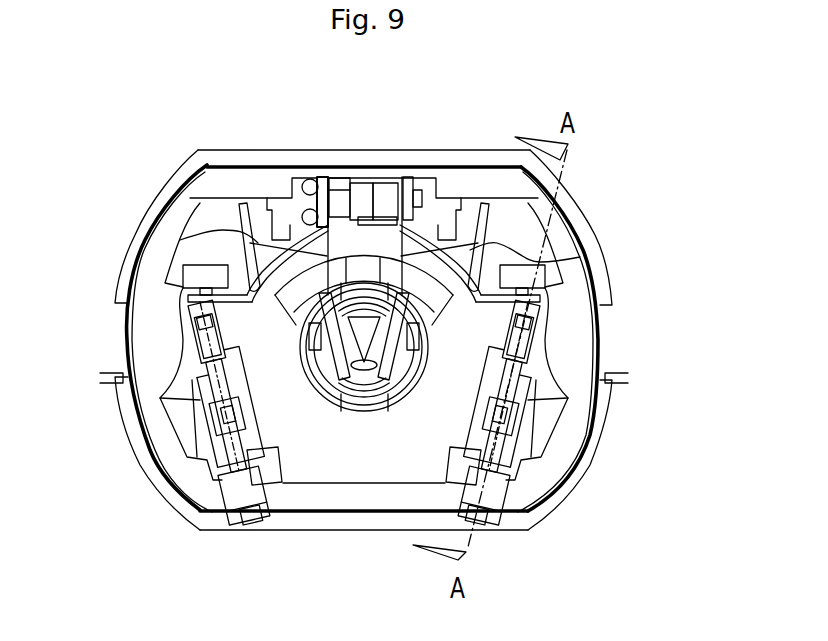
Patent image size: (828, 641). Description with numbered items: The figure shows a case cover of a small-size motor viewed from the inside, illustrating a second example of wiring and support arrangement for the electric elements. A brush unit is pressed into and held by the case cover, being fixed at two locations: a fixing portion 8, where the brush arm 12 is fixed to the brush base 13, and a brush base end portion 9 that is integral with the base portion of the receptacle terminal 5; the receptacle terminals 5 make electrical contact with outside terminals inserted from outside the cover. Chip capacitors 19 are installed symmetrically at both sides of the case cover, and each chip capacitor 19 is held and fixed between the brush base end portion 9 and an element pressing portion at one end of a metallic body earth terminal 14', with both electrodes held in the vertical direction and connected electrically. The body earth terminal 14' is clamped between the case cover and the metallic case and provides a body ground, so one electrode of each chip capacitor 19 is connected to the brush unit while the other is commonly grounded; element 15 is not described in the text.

The support block 15 is at (377, 174).
The fixing portion 8 is at (404, 178).
The receptacle terminal 5 is at (190, 202).
The brush arm 12 is at (190, 238).
The brush base 13 is at (580, 257).
The chip capacitor 19 is at (205, 322).
The brush base end portion 9 is at (528, 316).
The body earth terminal 14' is at (365, 529).